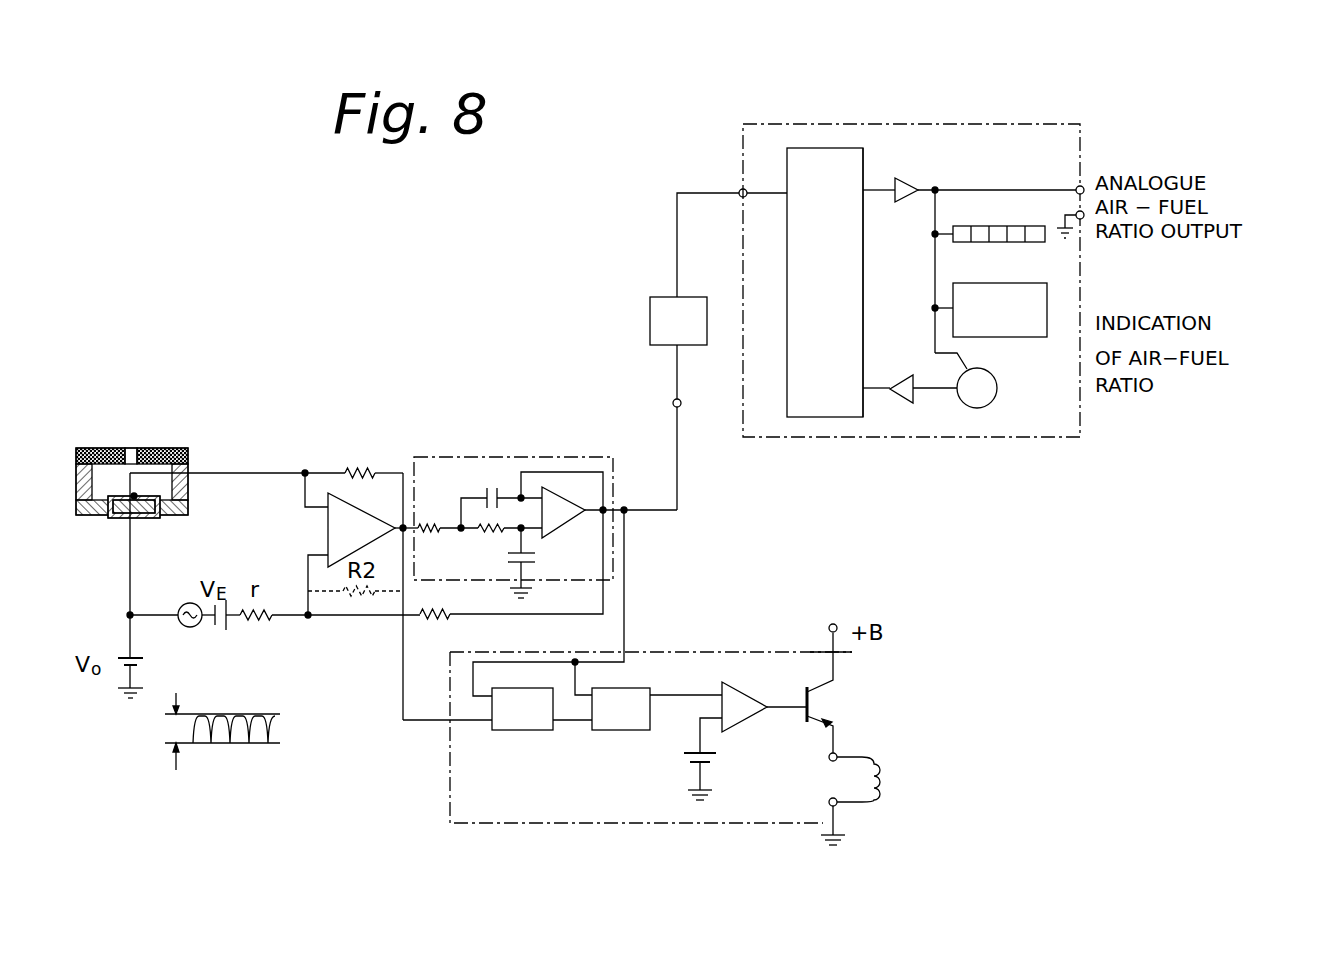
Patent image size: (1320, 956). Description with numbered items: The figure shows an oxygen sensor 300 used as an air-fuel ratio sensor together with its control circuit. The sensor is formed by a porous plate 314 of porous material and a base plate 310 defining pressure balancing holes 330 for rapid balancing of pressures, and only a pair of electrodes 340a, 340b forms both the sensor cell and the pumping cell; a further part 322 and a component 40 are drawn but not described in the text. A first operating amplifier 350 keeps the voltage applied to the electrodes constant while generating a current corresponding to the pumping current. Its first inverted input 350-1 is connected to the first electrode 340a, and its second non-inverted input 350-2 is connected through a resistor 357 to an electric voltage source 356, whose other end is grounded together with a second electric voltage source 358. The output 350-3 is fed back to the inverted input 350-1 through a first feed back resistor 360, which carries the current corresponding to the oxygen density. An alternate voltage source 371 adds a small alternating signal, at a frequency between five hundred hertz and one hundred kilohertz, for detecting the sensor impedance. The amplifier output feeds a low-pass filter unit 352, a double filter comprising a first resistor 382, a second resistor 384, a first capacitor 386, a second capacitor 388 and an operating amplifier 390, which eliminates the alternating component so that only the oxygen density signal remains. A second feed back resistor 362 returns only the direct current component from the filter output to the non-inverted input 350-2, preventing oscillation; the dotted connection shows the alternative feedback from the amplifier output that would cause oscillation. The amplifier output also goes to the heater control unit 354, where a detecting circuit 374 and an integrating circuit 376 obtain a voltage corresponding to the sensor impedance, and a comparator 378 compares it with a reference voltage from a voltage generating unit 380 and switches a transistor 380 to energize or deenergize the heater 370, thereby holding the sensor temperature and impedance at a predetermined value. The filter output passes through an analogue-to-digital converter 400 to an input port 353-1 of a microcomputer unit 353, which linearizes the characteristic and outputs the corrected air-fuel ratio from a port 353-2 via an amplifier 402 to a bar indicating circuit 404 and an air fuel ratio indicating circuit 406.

The sensor 300 is at (247, 358).
The base plate 310 is at (188, 500).
The porous plate 314 is at (176, 448).
The electrode lead 322 is at (125, 448).
The pressure balancing holes 330 is at (104, 516).
The first electrode 340a is at (136, 518).
The second electrode 340b is at (150, 517).
The first operating amplifier 350 is at (388, 548).
The first inverted input 350-1 is at (305, 471).
The second non-inverted input 350-2 is at (310, 555).
The output 350-3 is at (403, 473).
The low-pass filter unit 352 is at (462, 457).
The microcomputer unit 353 is at (823, 420).
The input port 353-1 is at (787, 190).
The output port 353-2 is at (866, 186).
The heater control unit 354 is at (554, 823).
The electric voltage source 356 is at (229, 628).
The resistor 357 is at (270, 620).
The second electric voltage source 358 is at (150, 643).
The first feed back resistor 360 is at (375, 466).
The second feed back resistor 362 is at (450, 618).
The heater 370 is at (874, 768).
The alternate voltage source 371 is at (197, 630).
The detecting circuit 374 is at (517, 732).
The integrating circuit 376 is at (620, 732).
The operating circuit 378 is at (750, 688).
The transistor 380 is at (805, 716).
The first resistor 382 is at (428, 524).
The second resistor 384 is at (482, 532).
The first capacitor 386 is at (500, 494).
The second capacitor 388 is at (535, 548).
The operating amplifier 390 is at (604, 510).
The analogue-to-digital converter 400 is at (650, 320).
The amplifier 402 is at (917, 186).
The bar indicating circuit 404 is at (997, 218).
The air fuel ratio indicating circuit 406 is at (1003, 283).
The indicator lamp 40 is at (994, 378).